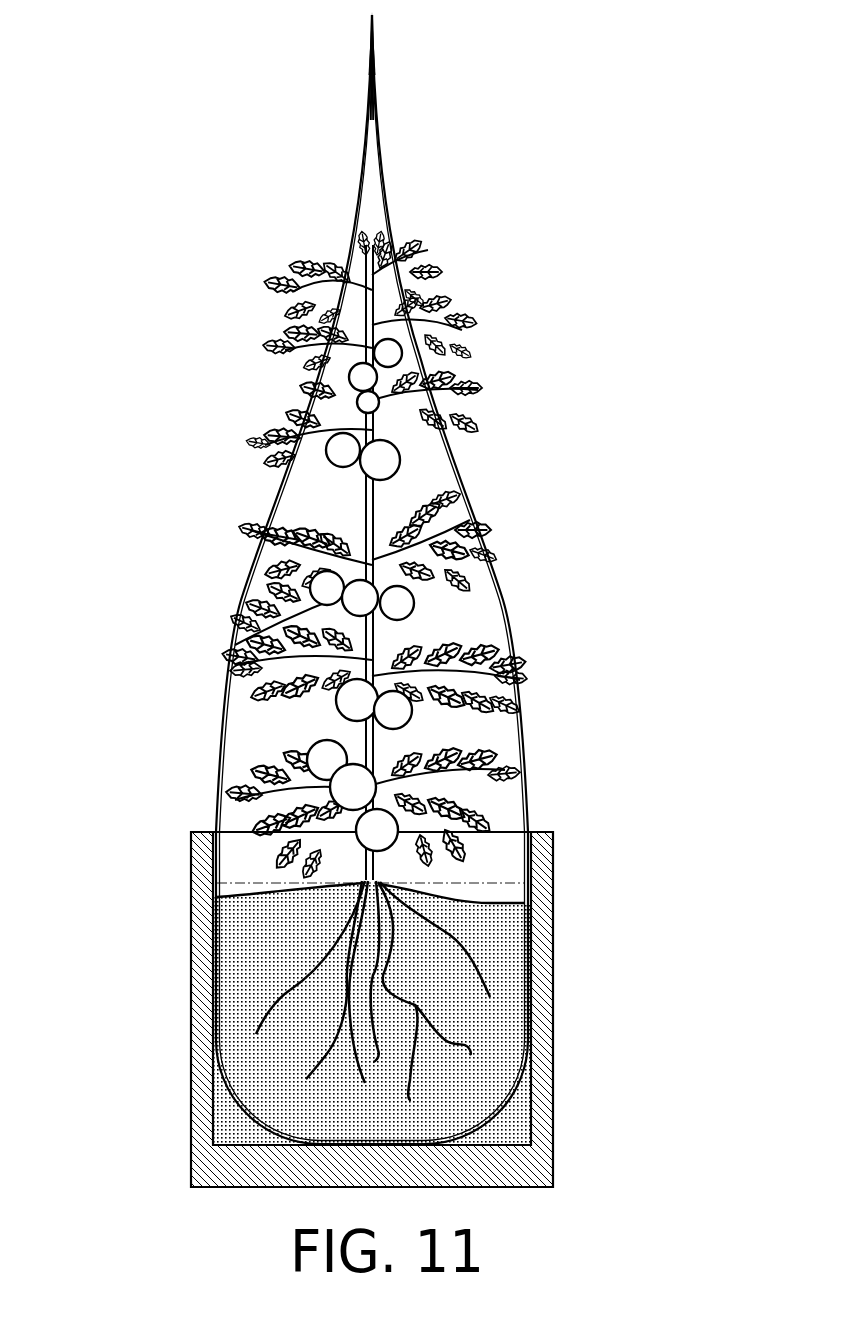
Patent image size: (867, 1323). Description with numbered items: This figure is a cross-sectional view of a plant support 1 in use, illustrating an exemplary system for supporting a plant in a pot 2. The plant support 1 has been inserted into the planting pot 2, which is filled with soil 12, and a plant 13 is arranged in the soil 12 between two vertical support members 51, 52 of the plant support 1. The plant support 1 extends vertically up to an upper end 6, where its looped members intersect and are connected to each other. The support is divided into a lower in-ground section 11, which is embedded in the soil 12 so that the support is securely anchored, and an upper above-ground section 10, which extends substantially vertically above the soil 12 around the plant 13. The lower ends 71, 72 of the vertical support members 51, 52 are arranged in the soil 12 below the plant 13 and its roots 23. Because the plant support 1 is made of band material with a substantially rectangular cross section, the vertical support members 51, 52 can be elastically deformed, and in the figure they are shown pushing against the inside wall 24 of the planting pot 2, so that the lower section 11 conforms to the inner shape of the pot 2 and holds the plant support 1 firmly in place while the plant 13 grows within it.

The plant support 1 is at (433, 164).
The pot 2 is at (533, 1167).
The upper end 6 is at (372, 27).
The upper above-ground section 10 is at (218, 782).
The lower in-ground section 11 is at (228, 1081).
The soil 12 is at (497, 943).
The plant 13 is at (366, 352).
The roots 23 is at (322, 952).
The inside wall 24 is at (527, 1080).
The vertical support member 51 is at (278, 497).
The vertical support member 52 is at (498, 598).
The lower end 71 is at (262, 1134).
The lower end 72 is at (481, 1135).